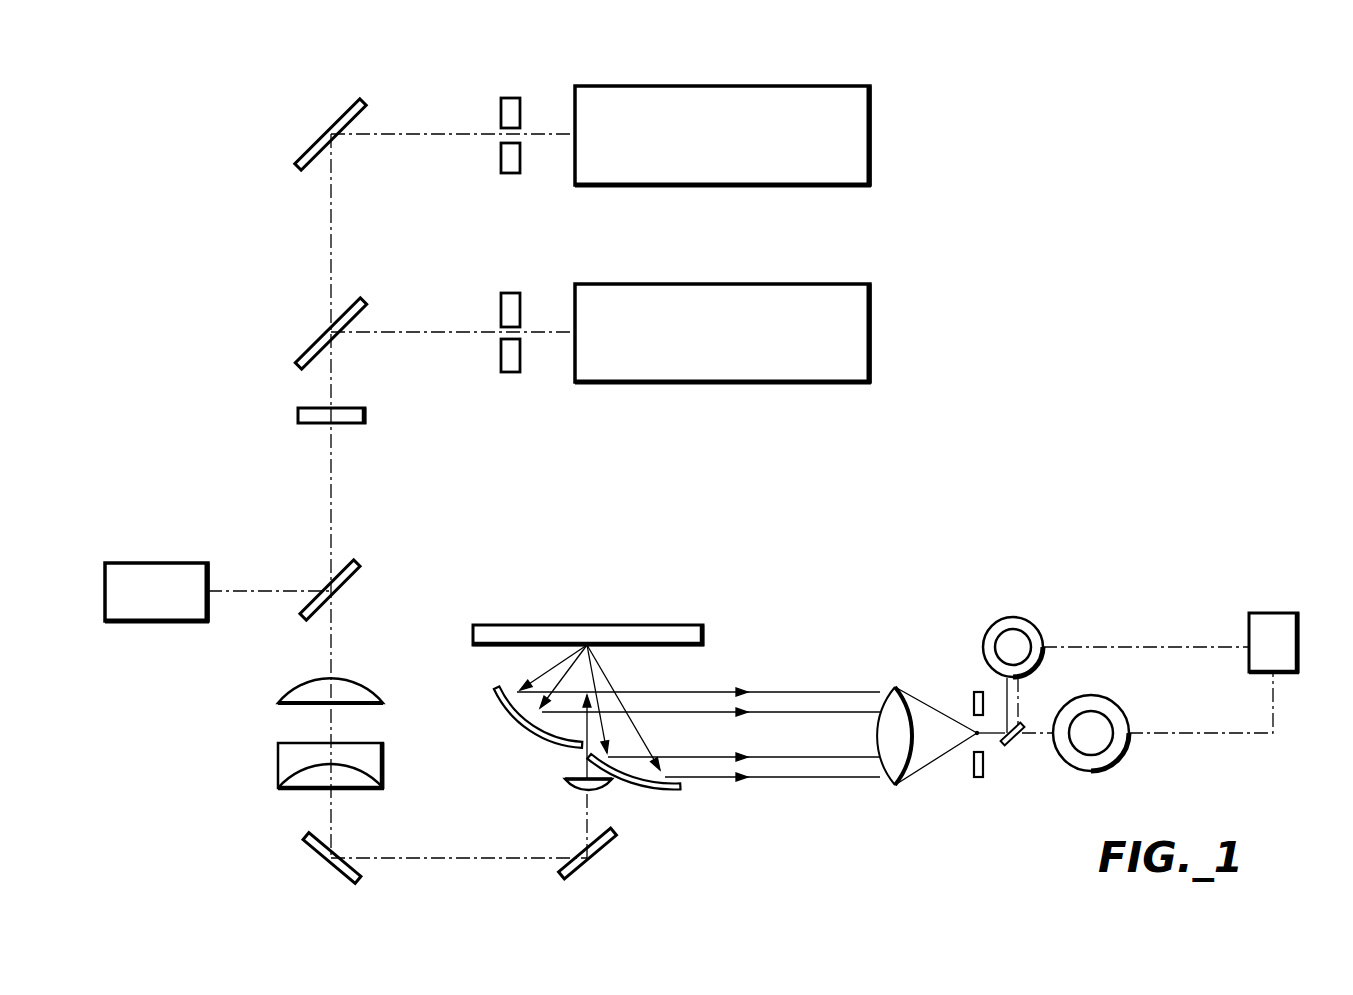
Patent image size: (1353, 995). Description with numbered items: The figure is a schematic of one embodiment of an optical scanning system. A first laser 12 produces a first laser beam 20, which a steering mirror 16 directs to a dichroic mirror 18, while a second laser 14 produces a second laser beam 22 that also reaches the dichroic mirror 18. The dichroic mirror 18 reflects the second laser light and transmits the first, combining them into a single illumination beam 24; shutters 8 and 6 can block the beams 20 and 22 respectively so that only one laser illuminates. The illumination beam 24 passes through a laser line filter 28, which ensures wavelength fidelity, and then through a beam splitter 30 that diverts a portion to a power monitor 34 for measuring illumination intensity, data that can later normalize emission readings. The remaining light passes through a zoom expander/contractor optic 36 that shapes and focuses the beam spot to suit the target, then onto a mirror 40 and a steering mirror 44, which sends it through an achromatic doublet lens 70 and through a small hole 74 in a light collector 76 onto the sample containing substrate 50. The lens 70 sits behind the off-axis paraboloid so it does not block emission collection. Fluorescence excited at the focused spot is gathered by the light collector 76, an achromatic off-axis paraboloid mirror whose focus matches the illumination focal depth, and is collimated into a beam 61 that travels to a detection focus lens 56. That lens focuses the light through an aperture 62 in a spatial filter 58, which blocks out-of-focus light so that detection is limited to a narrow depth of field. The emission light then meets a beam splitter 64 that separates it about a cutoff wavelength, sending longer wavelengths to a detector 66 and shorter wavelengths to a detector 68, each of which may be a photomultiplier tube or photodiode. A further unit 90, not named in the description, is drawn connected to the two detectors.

The shutter 6 is at (510, 293).
The shutter 8 is at (510, 98).
The first laser 12 is at (871, 134).
The second laser 14 is at (871, 332).
The steering mirror 16 is at (308, 152).
The dichroic mirror 18 is at (308, 350).
The first laser beam 20 is at (447, 133).
The second laser beam 22 is at (447, 331).
The illumination beam 24 is at (333, 387).
The laser line filter 28 is at (365, 420).
The beam splitter 30 is at (357, 590).
The power monitor 34 is at (172, 563).
The zoom expander/contractor optic 36 is at (264, 678).
The mirror 40 is at (320, 862).
The steering mirror 44 is at (600, 865).
The sample containing substrate 50 is at (557, 625).
The detection focus lens 56 is at (893, 687).
The spatial filter 58 is at (975, 780).
The collimated beam 61 is at (785, 780).
The aperture 62 is at (988, 748).
The beam splitter 64 is at (1025, 725).
The detector 66 is at (1015, 617).
The detector 68 is at (1095, 773).
The achromatic doublet lens 70 is at (596, 793).
The hole 74 is at (570, 760).
The light collector 76 is at (546, 727).
The controller 90 is at (1275, 613).